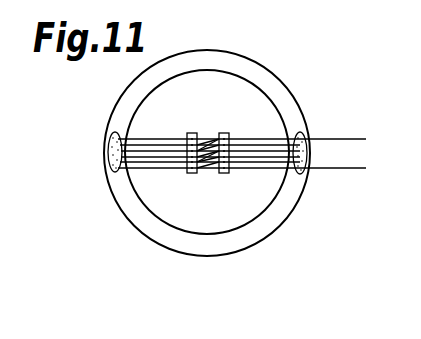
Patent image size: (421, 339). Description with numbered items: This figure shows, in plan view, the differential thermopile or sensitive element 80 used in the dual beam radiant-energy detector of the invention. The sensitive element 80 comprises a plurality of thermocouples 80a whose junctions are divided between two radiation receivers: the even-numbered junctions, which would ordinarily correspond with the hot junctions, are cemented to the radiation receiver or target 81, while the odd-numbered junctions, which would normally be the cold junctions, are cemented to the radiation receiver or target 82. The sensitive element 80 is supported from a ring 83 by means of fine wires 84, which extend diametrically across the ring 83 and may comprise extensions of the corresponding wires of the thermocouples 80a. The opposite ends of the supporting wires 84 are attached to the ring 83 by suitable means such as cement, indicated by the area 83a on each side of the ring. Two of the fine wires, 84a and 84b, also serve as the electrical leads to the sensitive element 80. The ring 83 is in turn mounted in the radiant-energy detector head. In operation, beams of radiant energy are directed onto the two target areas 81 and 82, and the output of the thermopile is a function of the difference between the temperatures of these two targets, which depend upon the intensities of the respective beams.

The sensitive element or thermopile 80 is at (198, 109).
The thermocouples 80a is at (205, 169).
The radiation receiver or target 81 is at (190, 173).
The radiation receiver or target 82 is at (226, 173).
The ring 83 is at (284, 93).
The cement area 83a is at (108, 139).
The fine wires 84 is at (250, 143).
The lead wire 84a is at (272, 144).
The lead wire 84b is at (272, 165).